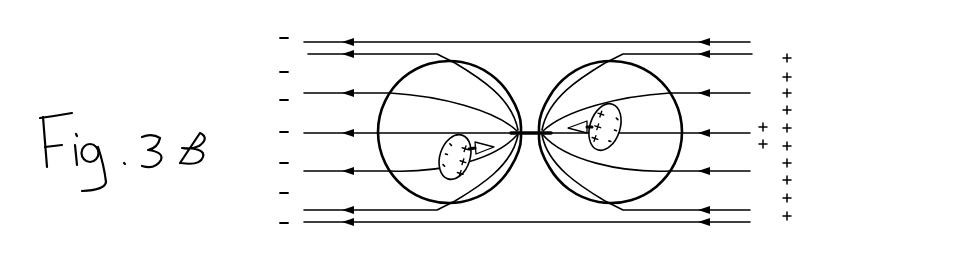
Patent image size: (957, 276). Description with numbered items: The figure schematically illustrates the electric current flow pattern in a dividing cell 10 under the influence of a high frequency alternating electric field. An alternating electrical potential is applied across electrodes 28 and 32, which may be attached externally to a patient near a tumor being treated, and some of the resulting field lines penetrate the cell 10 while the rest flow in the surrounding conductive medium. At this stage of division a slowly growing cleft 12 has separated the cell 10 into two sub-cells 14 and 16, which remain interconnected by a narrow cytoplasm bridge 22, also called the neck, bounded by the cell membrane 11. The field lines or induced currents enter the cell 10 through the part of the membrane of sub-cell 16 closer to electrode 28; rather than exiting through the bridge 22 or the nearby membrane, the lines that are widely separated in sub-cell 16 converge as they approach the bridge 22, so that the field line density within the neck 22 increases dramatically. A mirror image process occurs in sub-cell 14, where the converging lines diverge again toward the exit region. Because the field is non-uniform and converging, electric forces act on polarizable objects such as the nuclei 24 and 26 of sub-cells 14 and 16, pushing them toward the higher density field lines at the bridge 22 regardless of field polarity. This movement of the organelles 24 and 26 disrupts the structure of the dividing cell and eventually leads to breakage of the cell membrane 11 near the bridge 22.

The cell 10 is at (530, 144).
The cell membrane 11 is at (610, 146).
The cleft 12 is at (535, 71).
The sub-cell 14 is at (466, 71).
The sub-cell 16 is at (592, 68).
The bridge 22 is at (532, 137).
The nucleus 24 is at (454, 136).
The nucleus 26 is at (616, 145).
The electrode 28 is at (797, 48).
The electrode 32 is at (289, 26).